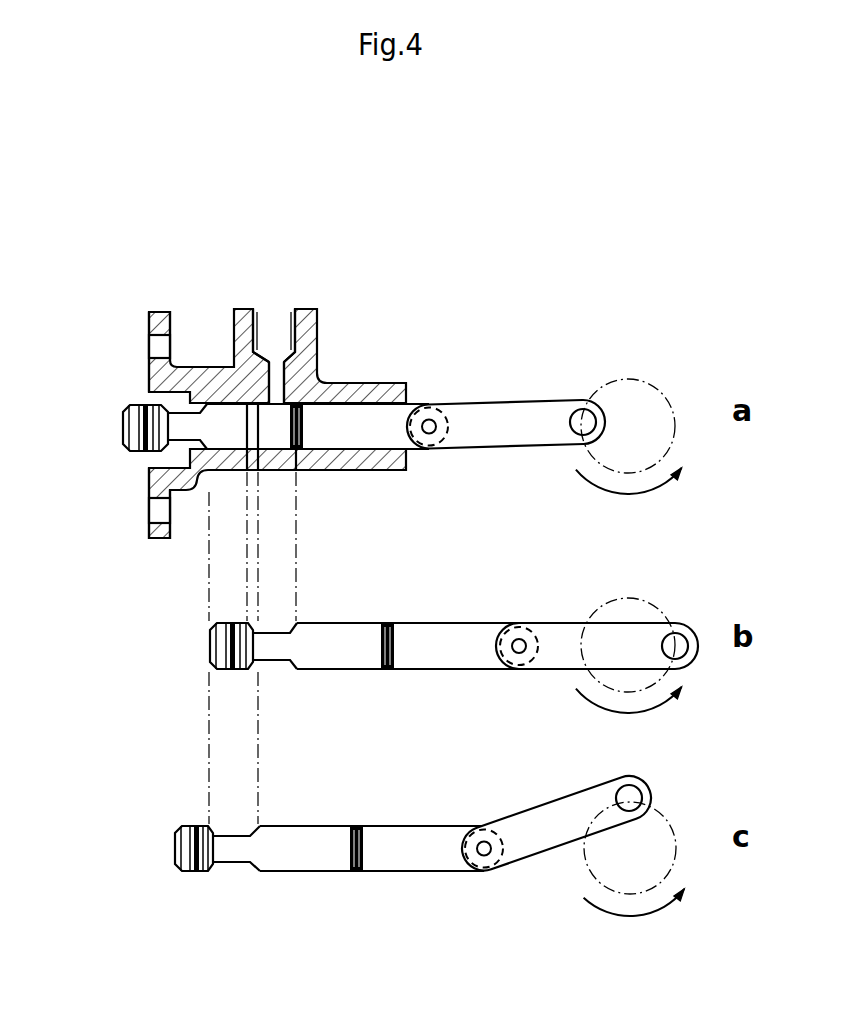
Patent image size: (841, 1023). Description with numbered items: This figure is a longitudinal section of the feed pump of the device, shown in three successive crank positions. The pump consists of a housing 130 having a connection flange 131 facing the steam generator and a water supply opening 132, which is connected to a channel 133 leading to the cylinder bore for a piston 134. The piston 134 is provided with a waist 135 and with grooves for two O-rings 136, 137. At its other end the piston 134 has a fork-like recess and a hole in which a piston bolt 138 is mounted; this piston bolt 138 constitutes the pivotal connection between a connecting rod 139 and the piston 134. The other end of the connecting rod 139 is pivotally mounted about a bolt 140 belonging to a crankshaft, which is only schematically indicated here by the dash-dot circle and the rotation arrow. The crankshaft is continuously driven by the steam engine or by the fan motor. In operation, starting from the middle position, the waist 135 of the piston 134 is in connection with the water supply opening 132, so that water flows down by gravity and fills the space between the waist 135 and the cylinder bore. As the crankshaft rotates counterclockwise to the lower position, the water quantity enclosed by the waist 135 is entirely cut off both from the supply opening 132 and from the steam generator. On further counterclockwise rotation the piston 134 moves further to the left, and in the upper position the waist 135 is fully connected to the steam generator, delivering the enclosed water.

The housing 130 is at (229, 360).
The connection flange 131 is at (146, 316).
The water supply opening 132 is at (269, 325).
The channel 133 is at (270, 385).
The piston 134 is at (240, 393).
The waist 135 is at (183, 435).
The O-ring 136 is at (130, 453).
The O-ring 137 is at (297, 402).
The piston bolt 138 is at (431, 420).
The connecting rod 139 is at (515, 316).
The bolt 140 is at (582, 412).